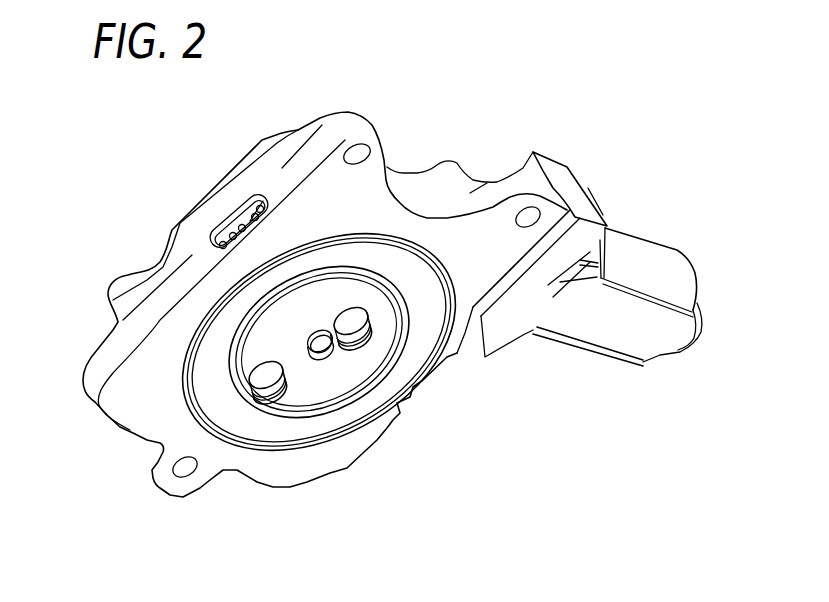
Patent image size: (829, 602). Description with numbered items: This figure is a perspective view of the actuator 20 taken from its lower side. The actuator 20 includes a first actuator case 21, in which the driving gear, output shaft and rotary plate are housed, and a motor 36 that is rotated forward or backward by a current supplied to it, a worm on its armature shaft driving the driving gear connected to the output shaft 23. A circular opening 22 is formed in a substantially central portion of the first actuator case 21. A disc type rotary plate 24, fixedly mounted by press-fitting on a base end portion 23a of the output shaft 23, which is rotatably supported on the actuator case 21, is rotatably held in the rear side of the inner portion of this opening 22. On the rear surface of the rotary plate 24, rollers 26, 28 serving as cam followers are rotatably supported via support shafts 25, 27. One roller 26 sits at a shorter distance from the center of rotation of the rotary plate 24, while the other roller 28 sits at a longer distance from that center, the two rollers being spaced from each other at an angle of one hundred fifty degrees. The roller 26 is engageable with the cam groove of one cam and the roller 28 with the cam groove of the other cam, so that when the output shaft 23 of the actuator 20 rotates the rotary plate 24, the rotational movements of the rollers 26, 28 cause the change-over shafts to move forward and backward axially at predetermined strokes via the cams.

The actuator 20 is at (442, 120).
The first actuator case 21 is at (122, 412).
The circular opening 22 is at (320, 282).
The output shaft 23 is at (326, 380).
The base end portion 23a is at (311, 353).
The rotary plate 24 is at (343, 380).
The support shaft 25 is at (336, 350).
The roller 26 is at (358, 330).
The support shaft 27 is at (272, 404).
The roller 28 is at (262, 376).
The motor 36 is at (587, 352).